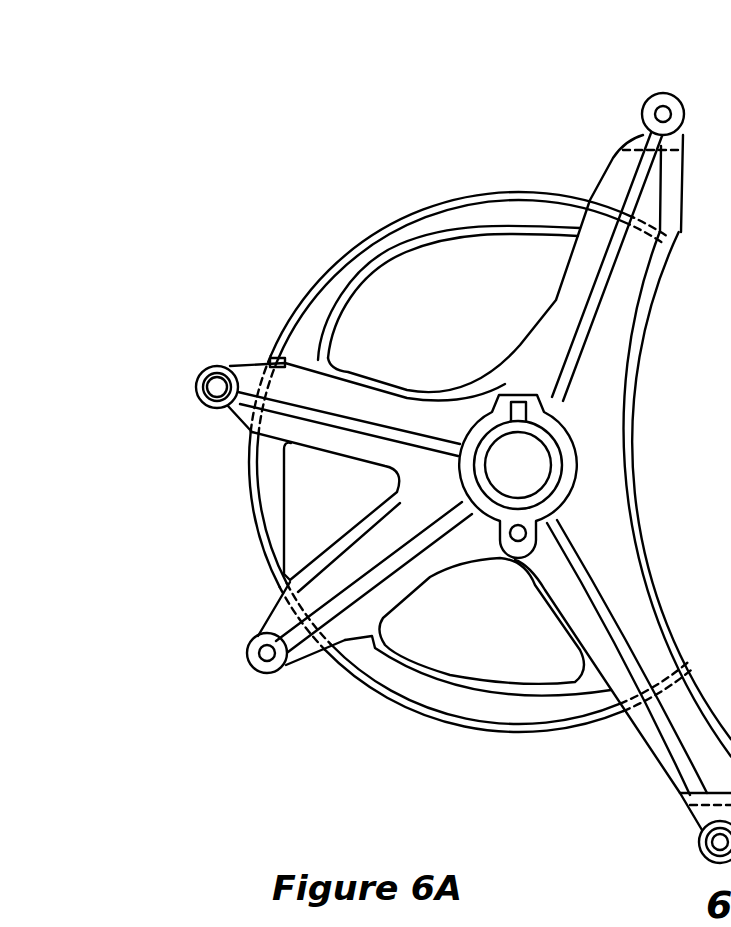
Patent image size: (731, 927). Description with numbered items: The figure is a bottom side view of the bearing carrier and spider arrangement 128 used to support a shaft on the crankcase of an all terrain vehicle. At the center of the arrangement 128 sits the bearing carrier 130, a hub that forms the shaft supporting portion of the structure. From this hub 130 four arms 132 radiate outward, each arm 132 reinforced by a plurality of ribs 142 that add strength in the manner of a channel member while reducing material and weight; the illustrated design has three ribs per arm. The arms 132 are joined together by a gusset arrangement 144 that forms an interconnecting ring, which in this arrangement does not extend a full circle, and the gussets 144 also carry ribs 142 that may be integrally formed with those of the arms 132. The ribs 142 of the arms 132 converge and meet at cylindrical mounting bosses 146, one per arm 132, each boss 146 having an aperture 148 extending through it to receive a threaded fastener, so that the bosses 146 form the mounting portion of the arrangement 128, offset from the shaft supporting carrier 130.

The bearing carrier and spider arrangement 128 is at (670, 320).
The bearing carrier 130 is at (545, 458).
The arms 132 is at (362, 410).
The ribs 142 is at (605, 172).
The gusset arrangement 144 is at (428, 225).
The mounting bosses 146 is at (645, 112).
The mounting holes 148 is at (665, 112).